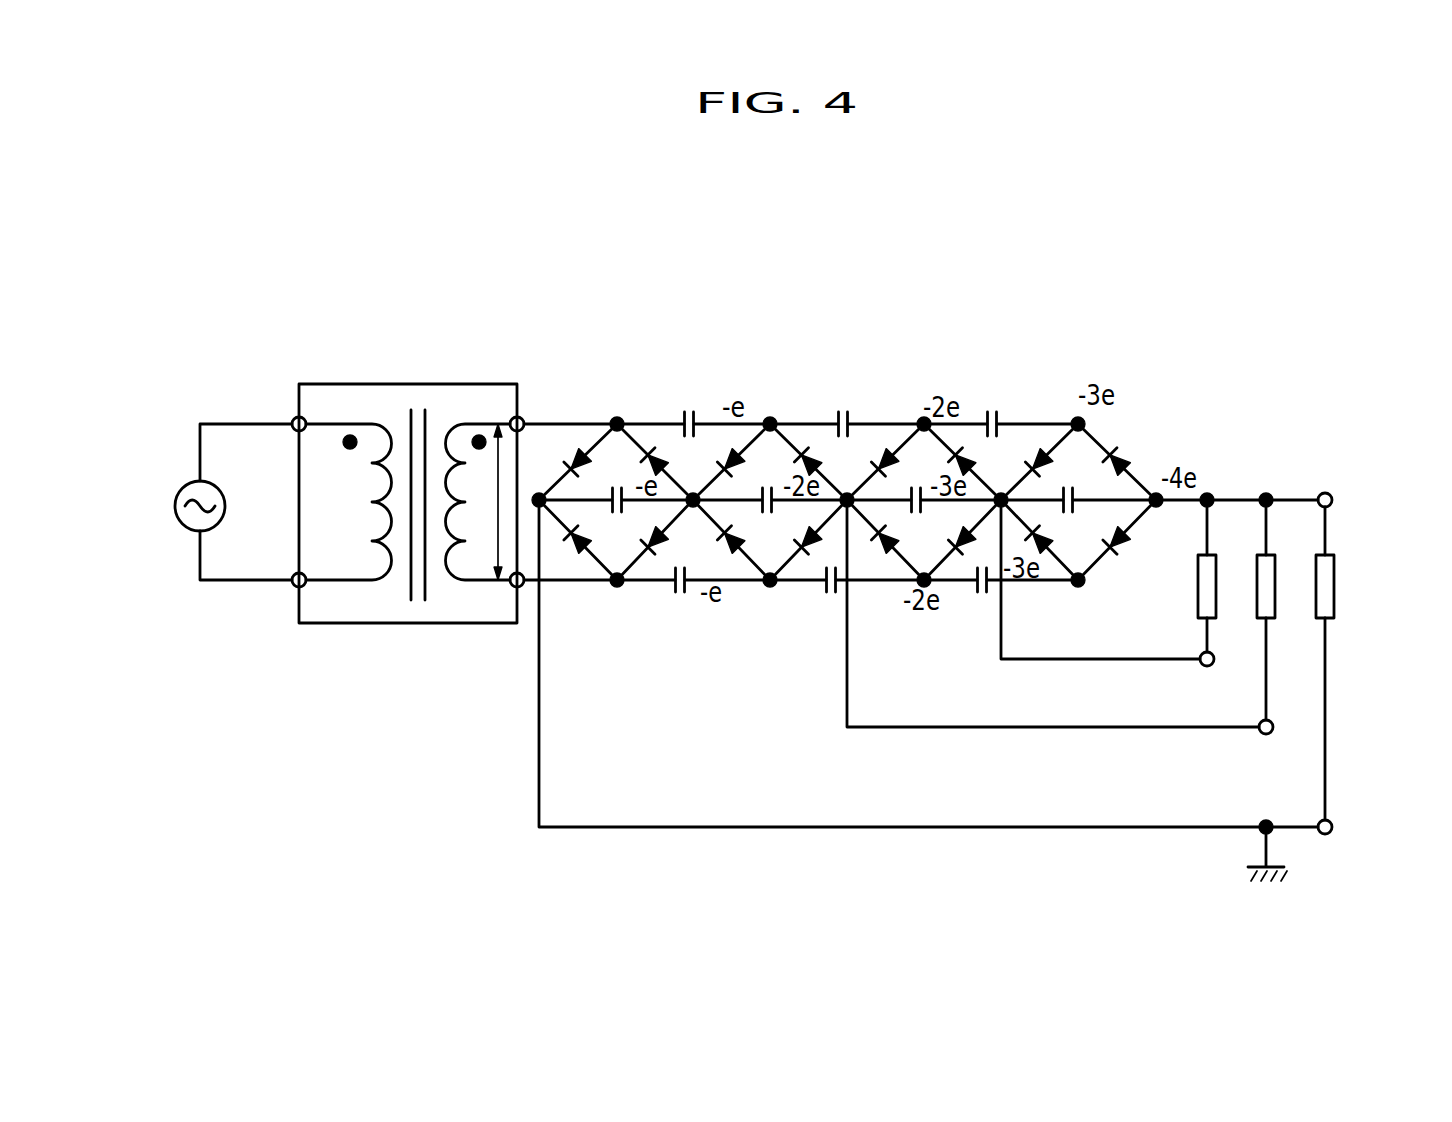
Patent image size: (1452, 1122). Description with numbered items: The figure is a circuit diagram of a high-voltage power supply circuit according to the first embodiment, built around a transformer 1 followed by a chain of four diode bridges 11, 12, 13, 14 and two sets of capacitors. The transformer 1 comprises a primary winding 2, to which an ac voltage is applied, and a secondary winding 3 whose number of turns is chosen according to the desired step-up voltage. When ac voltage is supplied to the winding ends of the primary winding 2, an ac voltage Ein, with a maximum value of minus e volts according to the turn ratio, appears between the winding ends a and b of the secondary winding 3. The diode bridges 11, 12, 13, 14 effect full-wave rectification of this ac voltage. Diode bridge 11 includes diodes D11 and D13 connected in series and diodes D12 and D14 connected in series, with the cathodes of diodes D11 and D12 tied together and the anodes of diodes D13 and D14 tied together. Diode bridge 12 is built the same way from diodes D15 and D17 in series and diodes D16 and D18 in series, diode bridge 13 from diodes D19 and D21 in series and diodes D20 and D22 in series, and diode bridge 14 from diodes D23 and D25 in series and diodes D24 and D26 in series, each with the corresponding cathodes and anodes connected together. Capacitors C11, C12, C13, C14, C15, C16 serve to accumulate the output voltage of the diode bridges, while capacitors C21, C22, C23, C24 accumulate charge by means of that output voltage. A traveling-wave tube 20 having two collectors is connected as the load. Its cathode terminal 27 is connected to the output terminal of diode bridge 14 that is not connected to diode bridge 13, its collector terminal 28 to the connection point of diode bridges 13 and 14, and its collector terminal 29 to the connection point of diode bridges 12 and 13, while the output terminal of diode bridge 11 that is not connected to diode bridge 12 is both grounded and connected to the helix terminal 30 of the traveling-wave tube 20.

The transformer 1 is at (408, 498).
The primary winding 2 is at (357, 582).
The secondary winding 3 is at (469, 582).
The diode bridge 11 is at (613, 481).
The diode bridge 12 is at (813, 485).
The diode bridge 13 is at (957, 487).
The diode bridge 14 is at (1112, 463).
The traveling-wave tube 20 is at (1347, 550).
The cathode terminal 27 is at (1325, 492).
The collector terminal 28 is at (1205, 667).
The collector terminal 29 is at (1260, 740).
The helix terminal 30 is at (1325, 835).
The diode D11 is at (576, 456).
The diode D12 is at (576, 547).
The diode D13 is at (658, 455).
The diode D14 is at (658, 547).
The diode D15 is at (736, 456).
The diode D16 is at (739, 547).
The diode D17 is at (815, 456).
The diode D18 is at (812, 549).
The diode D19 is at (887, 456).
The diode D20 is at (883, 549).
The diode D21 is at (966, 456).
The diode D22 is at (965, 549).
The diode D23 is at (1041, 456).
The diode D24 is at (1044, 549).
The diode D25 is at (1121, 456).
The diode D26 is at (1123, 546).
The capacitor C11 is at (684, 413).
The capacitor C12 is at (686, 592).
The capacitor C13 is at (838, 413).
The capacitor C14 is at (835, 592).
The capacitor C15 is at (1013, 390).
The capacitor C16 is at (986, 594).
The capacitor C21 is at (610, 513).
The capacitor C22 is at (760, 513).
The capacitor C23 is at (924, 512).
The capacitor C24 is at (1075, 512).
The winding end a is at (519, 418).
The winding end b is at (519, 586).
The ac voltage Ein is at (497, 495).